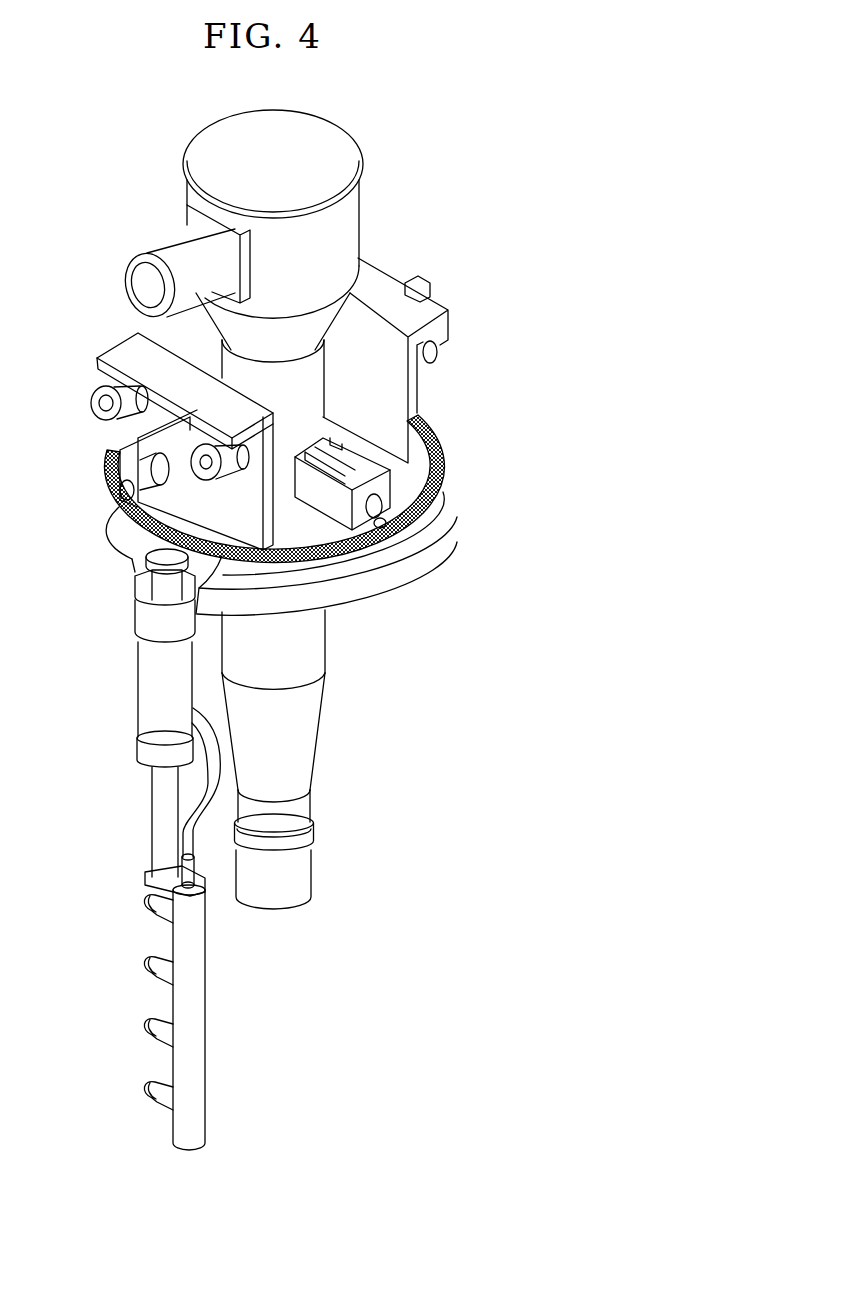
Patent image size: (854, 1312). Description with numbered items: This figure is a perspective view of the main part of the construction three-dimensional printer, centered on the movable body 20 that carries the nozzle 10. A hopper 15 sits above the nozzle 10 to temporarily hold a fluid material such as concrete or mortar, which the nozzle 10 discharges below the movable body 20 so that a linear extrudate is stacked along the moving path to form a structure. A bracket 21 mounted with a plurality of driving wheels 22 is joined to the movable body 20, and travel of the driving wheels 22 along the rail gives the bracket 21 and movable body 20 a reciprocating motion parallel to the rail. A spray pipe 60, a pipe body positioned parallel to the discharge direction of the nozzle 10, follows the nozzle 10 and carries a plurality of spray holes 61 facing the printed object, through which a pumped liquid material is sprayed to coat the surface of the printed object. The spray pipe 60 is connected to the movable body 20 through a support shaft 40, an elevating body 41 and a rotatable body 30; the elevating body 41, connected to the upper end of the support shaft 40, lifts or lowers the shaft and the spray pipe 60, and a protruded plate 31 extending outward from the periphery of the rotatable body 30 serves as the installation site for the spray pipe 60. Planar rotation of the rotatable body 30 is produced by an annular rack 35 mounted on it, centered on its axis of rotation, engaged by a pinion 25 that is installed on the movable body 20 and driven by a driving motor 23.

The nozzle 10 is at (307, 740).
The hopper 15 is at (353, 222).
The movable body 20 is at (353, 590).
The bracket 21 is at (118, 352).
The driving wheels 22 is at (103, 407).
The driving motor 23 is at (420, 505).
The pinion 25 is at (403, 523).
The rotatable body 30 is at (380, 553).
The protruded plate 31 is at (142, 607).
The annular rack 35 is at (437, 470).
The support shaft 40 is at (160, 818).
The elevating body 41 is at (145, 690).
The spray pipe 60 is at (200, 1033).
The spray holes 61 is at (143, 958).